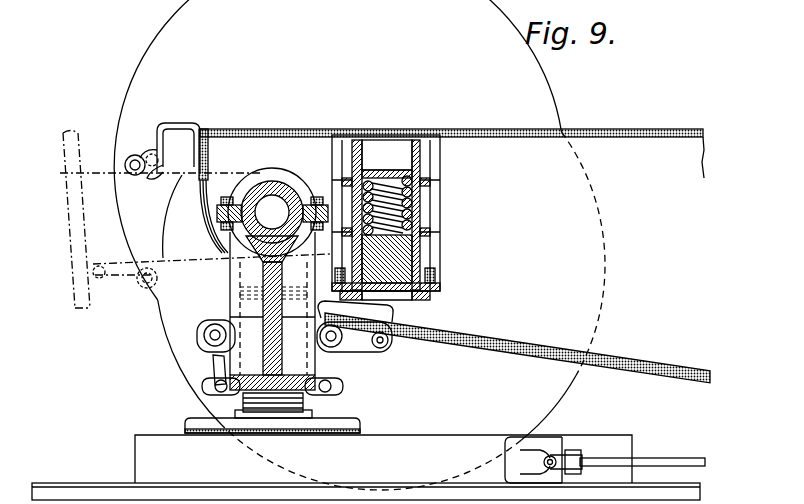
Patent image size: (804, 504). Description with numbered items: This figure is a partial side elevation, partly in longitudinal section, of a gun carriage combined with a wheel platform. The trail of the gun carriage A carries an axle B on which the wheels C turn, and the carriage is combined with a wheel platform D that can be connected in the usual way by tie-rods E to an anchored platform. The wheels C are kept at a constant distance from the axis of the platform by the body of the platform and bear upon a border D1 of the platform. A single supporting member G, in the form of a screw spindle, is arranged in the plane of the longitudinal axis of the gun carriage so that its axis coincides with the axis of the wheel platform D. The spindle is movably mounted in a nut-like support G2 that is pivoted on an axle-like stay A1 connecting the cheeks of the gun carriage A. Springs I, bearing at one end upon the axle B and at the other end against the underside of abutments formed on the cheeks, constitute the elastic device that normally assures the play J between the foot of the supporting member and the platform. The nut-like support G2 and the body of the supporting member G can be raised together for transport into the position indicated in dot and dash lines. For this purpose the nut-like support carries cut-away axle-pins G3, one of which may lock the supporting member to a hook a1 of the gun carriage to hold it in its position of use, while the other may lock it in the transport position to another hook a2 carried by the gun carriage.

The trail of gun carriage A is at (628, 147).
The axle-like stay A1 is at (272, 175).
The hook a1 is at (362, 347).
The hook a2 is at (158, 140).
The axle B is at (418, 265).
The wheels C is at (525, 97).
The wheel platform D is at (455, 445).
The border D1 is at (72, 485).
The tie-rods E is at (658, 462).
The supporting member G is at (305, 402).
The nut-like support G2 is at (255, 278).
The cut-away axle-pins G3 is at (337, 358).
The springs I is at (420, 205).
The play J is at (352, 432).